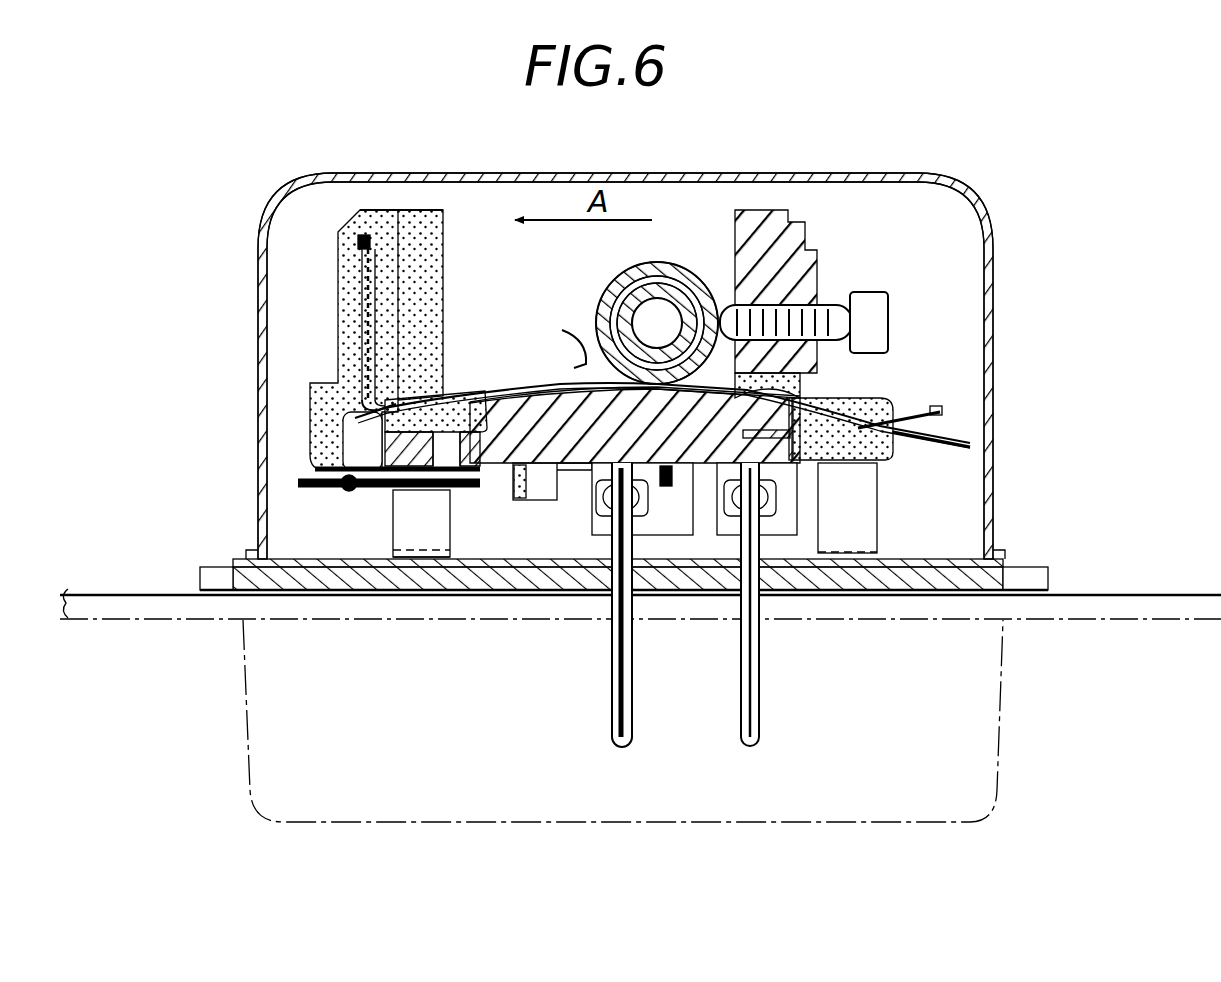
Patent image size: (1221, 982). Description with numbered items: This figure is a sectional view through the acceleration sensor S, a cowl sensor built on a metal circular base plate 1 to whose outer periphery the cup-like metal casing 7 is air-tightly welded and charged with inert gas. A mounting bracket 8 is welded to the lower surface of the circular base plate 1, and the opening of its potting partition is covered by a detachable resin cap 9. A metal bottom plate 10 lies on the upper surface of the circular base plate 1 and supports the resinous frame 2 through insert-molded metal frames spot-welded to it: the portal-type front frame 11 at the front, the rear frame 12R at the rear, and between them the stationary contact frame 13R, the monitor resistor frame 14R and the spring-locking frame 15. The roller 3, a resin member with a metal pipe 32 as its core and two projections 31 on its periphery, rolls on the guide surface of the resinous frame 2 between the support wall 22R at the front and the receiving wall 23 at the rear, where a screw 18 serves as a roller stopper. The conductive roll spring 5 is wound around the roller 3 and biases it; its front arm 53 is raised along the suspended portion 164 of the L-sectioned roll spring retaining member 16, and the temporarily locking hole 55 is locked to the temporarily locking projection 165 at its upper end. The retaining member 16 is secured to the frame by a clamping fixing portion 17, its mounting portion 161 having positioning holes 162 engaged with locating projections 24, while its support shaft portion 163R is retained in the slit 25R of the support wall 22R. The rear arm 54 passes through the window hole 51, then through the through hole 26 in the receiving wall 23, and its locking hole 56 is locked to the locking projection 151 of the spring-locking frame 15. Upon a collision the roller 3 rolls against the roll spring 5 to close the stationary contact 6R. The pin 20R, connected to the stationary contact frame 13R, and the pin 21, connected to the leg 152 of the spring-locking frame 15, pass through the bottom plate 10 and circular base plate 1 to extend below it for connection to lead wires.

The circular base plate 1 is at (1020, 566).
The resinous frame 2 is at (668, 485).
The roller 3 is at (622, 288).
The roll spring 5 is at (472, 390).
The metal casing 7 is at (652, 176).
The mounting bracket 8 is at (318, 630).
The cap 9 is at (247, 735).
The bottom plate 10 is at (306, 560).
The front frame 11 is at (432, 575).
The right rear frame 12R is at (858, 553).
The right stationary contact frame 13R is at (680, 537).
The right monitor resistor frame 14R is at (536, 468).
The spring-locking frame 15 is at (882, 456).
The roll spring retaining member 16 is at (296, 467).
The clamping fixing portion 17 is at (470, 470).
The screw 18 is at (880, 315).
The right pin 20R is at (611, 688).
The pin 21 is at (580, 470).
The right support wall 22R is at (382, 228).
The receiving wall 23 is at (808, 262).
The locating projections 24 is at (406, 492).
The right slit 25R is at (362, 320).
The through hole 26 is at (790, 390).
The projections 31 is at (650, 476).
The metal pipe 32 is at (668, 285).
The window hole 51 is at (500, 395).
The front arm 53 is at (358, 239).
The rear arm 54 is at (945, 442).
The temporarily locking hole 55 is at (340, 262).
The locking hole 56 is at (882, 398).
The right stationary contact 6R is at (564, 330).
The locking projection 151 is at (934, 408).
The leg 152 is at (793, 537).
The mounting portion 161 is at (352, 492).
The positioning holes 162 is at (388, 490).
The right support shaft portion 163R is at (350, 436).
The suspended portion 164 is at (402, 372).
The temporarily locking projection 165 is at (368, 248).
The acceleration sensor S is at (990, 215).